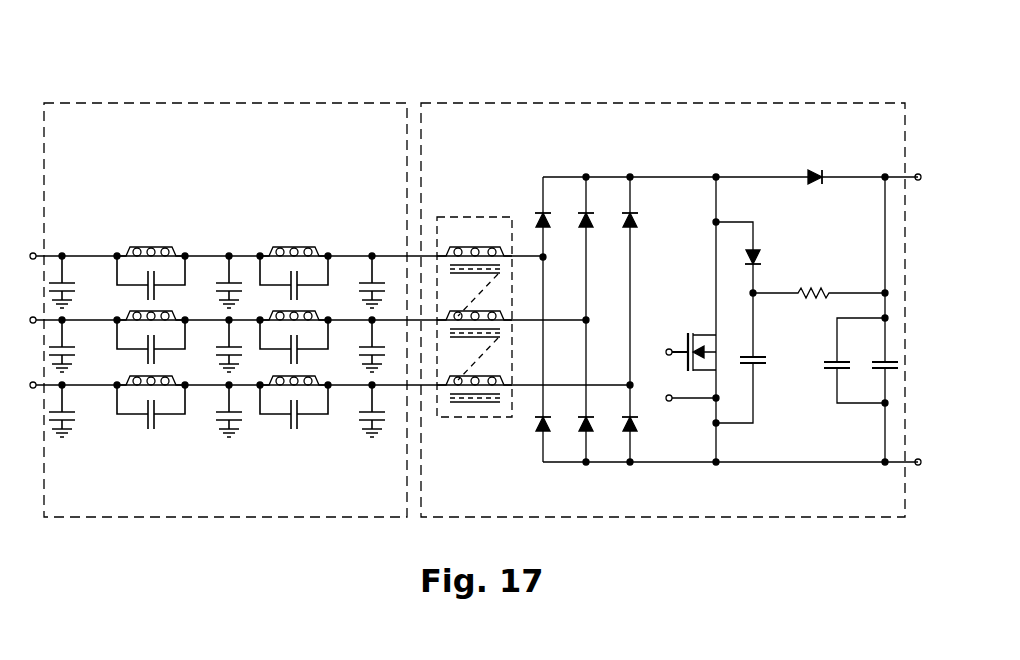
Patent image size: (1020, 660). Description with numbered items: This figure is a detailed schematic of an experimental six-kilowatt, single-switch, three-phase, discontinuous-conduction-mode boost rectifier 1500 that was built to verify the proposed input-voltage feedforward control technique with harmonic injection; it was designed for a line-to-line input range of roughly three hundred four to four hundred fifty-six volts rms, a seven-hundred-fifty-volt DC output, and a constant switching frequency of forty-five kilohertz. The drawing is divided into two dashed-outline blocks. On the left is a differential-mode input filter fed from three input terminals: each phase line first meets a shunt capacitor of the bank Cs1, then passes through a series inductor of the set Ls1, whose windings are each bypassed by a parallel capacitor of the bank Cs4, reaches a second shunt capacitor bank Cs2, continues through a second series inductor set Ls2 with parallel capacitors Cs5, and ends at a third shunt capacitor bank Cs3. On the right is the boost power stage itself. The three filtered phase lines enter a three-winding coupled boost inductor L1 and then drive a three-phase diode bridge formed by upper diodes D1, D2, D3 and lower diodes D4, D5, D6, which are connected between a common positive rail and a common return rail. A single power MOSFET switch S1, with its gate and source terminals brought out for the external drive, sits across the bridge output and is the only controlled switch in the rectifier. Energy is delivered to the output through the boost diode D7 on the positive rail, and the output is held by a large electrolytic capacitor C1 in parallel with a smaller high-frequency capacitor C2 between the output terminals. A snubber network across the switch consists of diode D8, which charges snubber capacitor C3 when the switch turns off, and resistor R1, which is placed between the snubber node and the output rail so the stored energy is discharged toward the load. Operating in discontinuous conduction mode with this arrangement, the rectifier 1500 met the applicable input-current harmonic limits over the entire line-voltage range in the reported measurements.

The DCM boost rectifier 1500 is at (730, 60).
The input filter shunt capacitors 3x2uF Cs1 is at (78, 332).
The input filter shunt capacitors 3x5uF Cs2 is at (223, 332).
The input filter shunt capacitors 3x5uF Cs3 is at (365, 332).
The parallel capacitors 3x0.33uF of Ls1 Cs4 is at (162, 456).
The parallel capacitors 3x1uF of Ls2 Cs5 is at (290, 456).
The series inductors 3x15uH Ls1 is at (150, 316).
The series inductors 3x13uH Ls2 is at (294, 316).
The coupled boost inductor 42uHx3 L1 is at (474, 305).
The rectifier diode D1 is at (553, 231).
The rectifier diode D2 is at (596, 231).
The rectifier diode D3 is at (640, 231).
The rectifier diode D4 is at (553, 435).
The rectifier diode D5 is at (596, 435).
The rectifier diode D6 is at (640, 435).
The boost diode DESI60-10A D7 is at (808, 151).
The snubber diode BYM26E D8 is at (773, 257).
The snubber resistor 1.5ohm 5W R1 is at (819, 291).
The boost switch MOSFET APT10026JN S1 is at (676, 330).
The output capacitor 330uF C1 is at (831, 368).
The output capacitor 1uF C2 is at (875, 366).
The snubber capacitor 0.047uF C3 is at (773, 358).